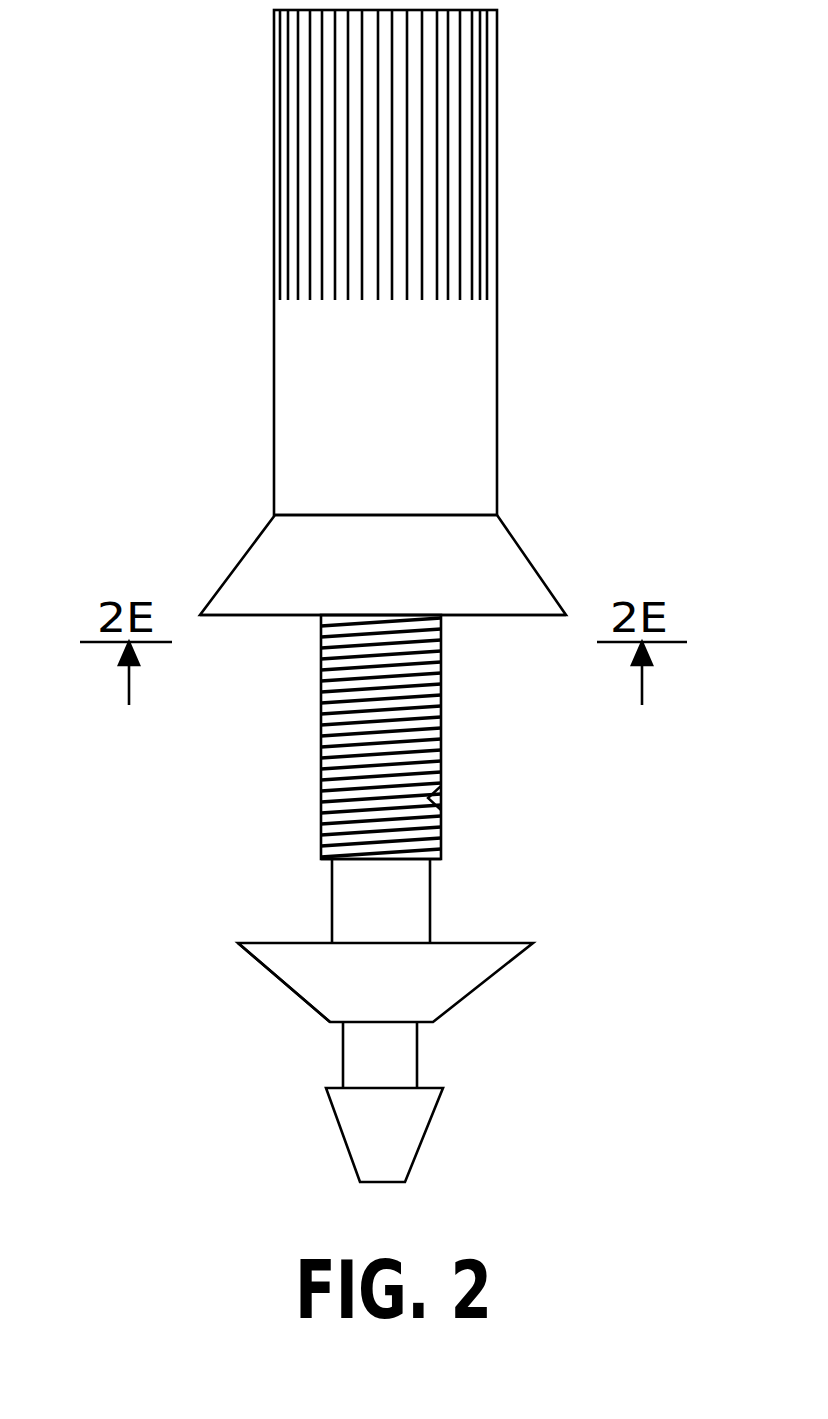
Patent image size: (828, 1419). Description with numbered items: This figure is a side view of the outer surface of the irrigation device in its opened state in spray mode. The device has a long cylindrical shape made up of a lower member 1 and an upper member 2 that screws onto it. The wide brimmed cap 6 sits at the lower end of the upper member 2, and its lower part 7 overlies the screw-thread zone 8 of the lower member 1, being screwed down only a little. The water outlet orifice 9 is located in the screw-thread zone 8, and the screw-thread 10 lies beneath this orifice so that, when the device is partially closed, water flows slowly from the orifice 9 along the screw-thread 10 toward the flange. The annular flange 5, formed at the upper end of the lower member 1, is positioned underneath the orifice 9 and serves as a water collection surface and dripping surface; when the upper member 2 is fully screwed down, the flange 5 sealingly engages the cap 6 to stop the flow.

The lower member 1 is at (290, 985).
The upper member 2 is at (274, 158).
The annular flange 5 is at (262, 942).
The wide brimmed cap 6 is at (513, 576).
The lower part of the cap 7 is at (490, 618).
The screw-thread zone 8 is at (321, 685).
The water outlet orifice 9 is at (442, 804).
The screw-thread 10 is at (441, 846).